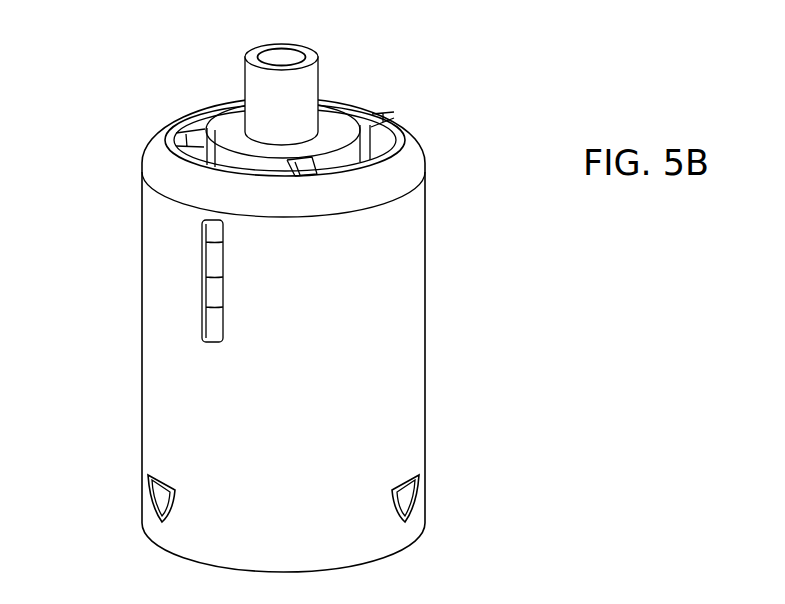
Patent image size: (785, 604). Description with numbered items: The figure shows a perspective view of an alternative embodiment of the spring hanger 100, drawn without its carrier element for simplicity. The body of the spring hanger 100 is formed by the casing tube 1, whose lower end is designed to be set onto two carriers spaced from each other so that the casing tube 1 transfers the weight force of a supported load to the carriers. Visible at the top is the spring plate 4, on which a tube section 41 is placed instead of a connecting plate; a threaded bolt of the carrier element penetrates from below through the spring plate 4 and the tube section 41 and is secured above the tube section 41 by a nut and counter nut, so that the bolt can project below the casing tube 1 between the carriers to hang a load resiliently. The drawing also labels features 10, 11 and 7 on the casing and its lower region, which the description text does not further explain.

The spring hanger 100 is at (452, 118).
The casing tube 1 is at (165, 370).
The housing side wall 10 is at (402, 218).
The housing top shoulder 11 is at (178, 172).
The spring plate 4 is at (333, 130).
The tube section 41 is at (253, 53).
The bottom openings 7 is at (163, 502).